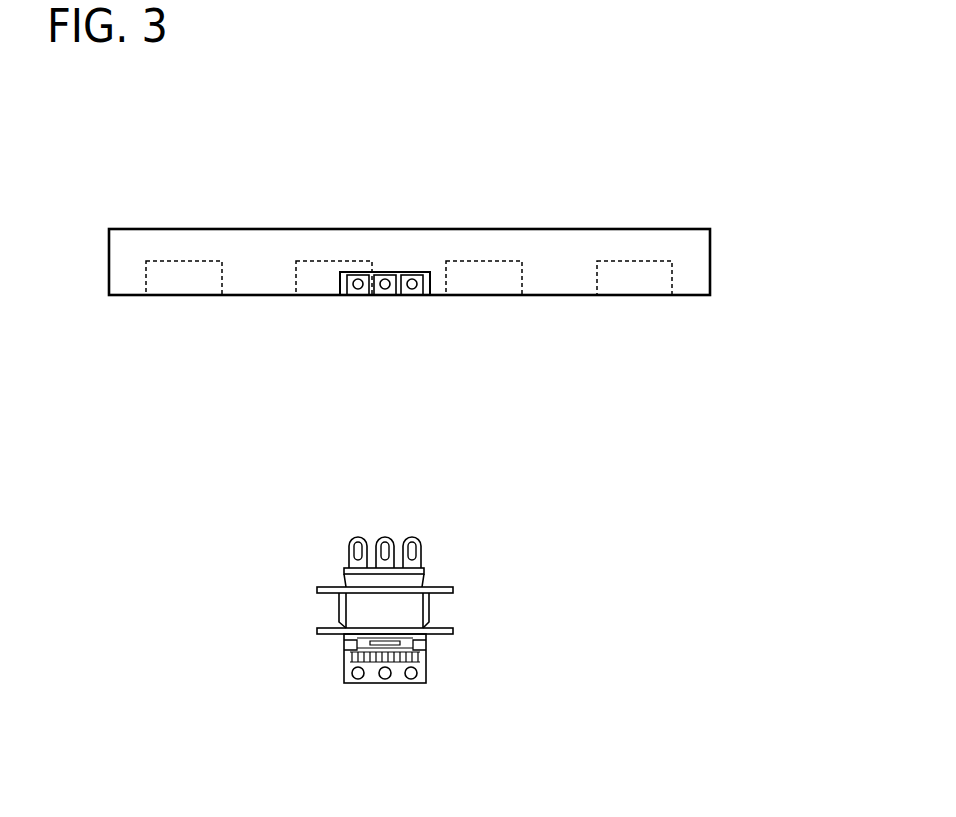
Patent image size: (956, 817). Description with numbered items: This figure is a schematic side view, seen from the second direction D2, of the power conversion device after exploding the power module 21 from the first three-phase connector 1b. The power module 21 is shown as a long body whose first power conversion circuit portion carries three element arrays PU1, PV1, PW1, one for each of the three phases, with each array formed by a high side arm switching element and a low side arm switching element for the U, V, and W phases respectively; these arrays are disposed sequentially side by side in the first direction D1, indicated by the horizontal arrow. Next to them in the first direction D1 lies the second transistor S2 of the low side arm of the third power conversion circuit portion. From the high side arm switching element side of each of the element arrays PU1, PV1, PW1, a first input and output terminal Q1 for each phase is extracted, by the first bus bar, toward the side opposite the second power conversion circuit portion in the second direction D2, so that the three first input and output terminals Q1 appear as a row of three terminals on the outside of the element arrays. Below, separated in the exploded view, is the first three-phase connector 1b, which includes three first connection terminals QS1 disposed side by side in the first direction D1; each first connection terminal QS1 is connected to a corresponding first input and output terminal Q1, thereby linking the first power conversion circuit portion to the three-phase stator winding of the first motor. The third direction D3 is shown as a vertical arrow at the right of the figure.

The power module 21 is at (737, 144).
The element array PU1 is at (187, 261).
The element array PV1 is at (337, 261).
The element array PW1 is at (488, 261).
The second transistor S2 is at (636, 261).
The first input and output terminal Q1 is at (412, 296).
The first connection terminal QS1 is at (412, 536).
The first three-phase connector 1b is at (541, 548).
The first direction D1 is at (462, 90).
The second direction D2 is at (801, 262).
The third direction D3 is at (785, 434).